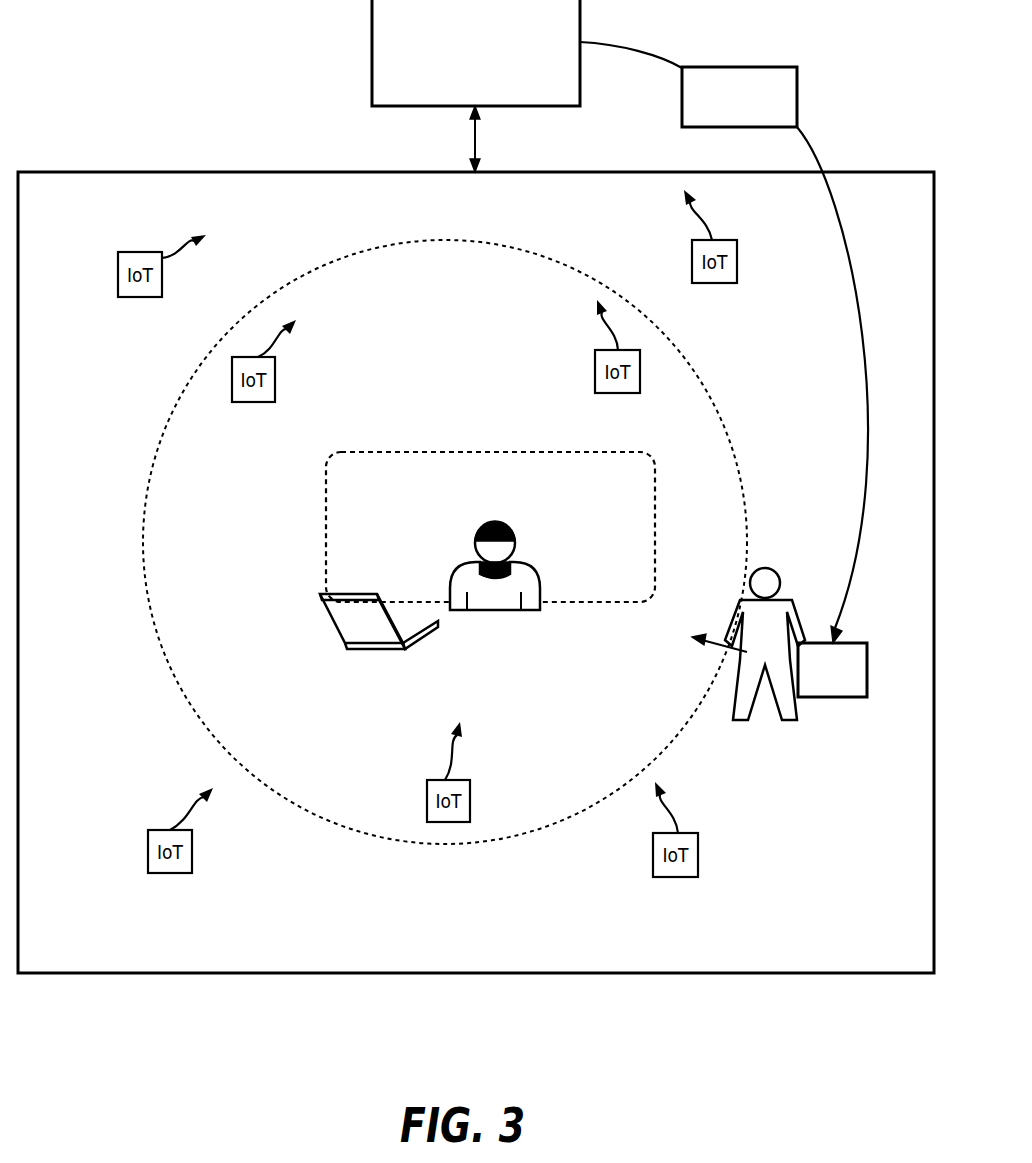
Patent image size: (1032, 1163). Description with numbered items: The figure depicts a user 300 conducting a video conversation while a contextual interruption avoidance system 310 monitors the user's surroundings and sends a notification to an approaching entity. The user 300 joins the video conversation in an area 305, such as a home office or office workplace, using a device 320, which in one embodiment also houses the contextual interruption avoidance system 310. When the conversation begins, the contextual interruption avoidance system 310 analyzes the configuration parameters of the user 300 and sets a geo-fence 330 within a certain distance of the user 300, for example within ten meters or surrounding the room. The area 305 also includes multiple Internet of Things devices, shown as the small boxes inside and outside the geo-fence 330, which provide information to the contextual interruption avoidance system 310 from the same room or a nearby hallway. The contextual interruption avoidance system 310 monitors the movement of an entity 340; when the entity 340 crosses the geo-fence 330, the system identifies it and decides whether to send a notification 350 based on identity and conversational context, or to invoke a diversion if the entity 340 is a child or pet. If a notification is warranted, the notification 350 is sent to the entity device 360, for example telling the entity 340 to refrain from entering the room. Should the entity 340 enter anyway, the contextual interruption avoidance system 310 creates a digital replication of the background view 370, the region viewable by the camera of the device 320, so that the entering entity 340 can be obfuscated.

The user 300 is at (495, 583).
The area 305 is at (148, 172).
The contextual interruption avoidance system 310 is at (527, 86).
The device 320 is at (372, 647).
The geo-fence 330 is at (158, 444).
The entity 340 is at (749, 658).
The notification 350 is at (775, 355).
The entity device 360 is at (833, 697).
The background view 370 is at (326, 527).